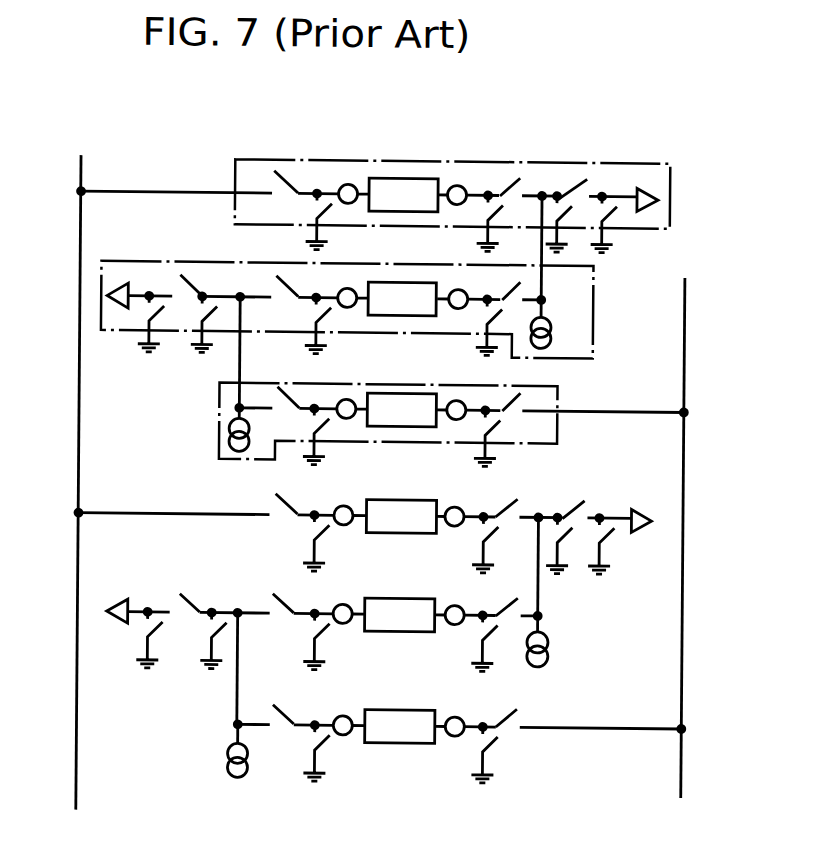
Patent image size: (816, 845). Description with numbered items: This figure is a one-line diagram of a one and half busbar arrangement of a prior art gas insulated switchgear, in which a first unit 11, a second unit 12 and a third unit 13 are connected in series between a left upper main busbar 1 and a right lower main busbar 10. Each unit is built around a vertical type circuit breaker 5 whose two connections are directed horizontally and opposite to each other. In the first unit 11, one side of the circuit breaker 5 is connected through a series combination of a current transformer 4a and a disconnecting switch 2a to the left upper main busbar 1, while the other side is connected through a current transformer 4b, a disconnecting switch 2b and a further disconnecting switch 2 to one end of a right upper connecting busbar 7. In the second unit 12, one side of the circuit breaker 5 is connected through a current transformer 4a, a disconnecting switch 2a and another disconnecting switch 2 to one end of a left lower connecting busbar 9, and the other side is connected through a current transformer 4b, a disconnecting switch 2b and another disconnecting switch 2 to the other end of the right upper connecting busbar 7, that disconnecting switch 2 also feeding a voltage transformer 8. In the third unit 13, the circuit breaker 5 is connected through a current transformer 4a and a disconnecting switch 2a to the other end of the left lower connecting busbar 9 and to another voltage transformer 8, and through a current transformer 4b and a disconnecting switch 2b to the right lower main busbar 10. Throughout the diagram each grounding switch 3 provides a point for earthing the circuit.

The left upper main busbar 1 is at (79, 291).
The disconnecting switch 2 is at (585, 184).
The disconnecting switch 2a is at (288, 179).
The disconnecting switch 2b is at (505, 185).
The grounding switch 3 is at (327, 211).
The current transformer 4a is at (348, 185).
The current transformer 4b is at (458, 185).
The vertical type circuit breaker 5 is at (404, 178).
The right upper connecting busbar 7 is at (540, 262).
The voltage transformer 8 is at (550, 338).
The left lower connecting busbar 9 is at (239, 385).
The right lower main busbar 10 is at (684, 396).
The first unit 11 is at (668, 216).
The second unit 12 is at (592, 298).
The third unit 13 is at (557, 430).